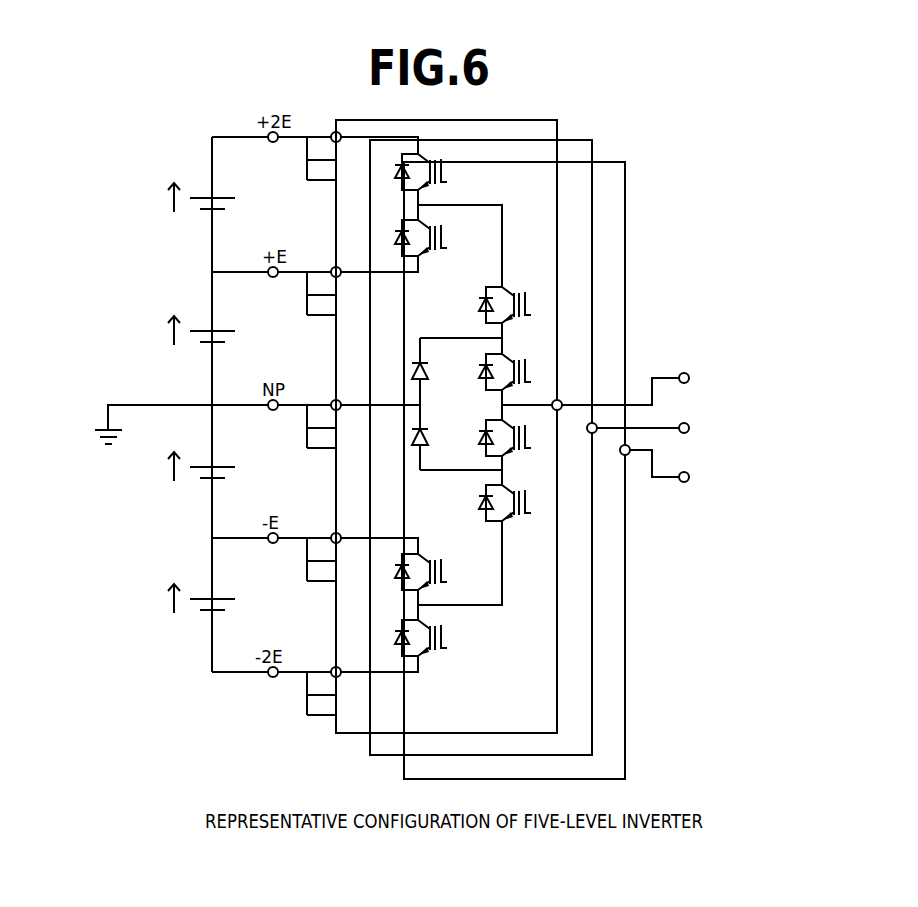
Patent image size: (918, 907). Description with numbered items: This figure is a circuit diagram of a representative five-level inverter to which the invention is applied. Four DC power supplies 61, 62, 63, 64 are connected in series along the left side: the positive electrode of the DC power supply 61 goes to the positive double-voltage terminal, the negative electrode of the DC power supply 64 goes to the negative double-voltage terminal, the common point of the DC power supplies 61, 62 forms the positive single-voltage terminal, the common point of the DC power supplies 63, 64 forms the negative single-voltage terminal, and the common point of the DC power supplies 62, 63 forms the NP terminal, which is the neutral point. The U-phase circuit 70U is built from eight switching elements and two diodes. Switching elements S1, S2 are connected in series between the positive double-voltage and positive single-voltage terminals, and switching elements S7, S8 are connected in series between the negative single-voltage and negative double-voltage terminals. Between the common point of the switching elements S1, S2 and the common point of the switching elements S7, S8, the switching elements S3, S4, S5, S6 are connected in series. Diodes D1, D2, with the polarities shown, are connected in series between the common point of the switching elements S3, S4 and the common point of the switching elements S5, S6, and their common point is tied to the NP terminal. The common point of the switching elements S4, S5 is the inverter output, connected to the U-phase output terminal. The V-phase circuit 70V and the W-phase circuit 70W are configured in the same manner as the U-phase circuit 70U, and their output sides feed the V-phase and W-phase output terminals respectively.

The DC power supply 61 is at (196, 209).
The DC power supply 62 is at (196, 342).
The DC power supply 63 is at (196, 478).
The DC power supply 64 is at (196, 610).
The U-phase circuit 70U is at (537, 426).
The V-phase circuit 70V is at (592, 592).
The W-phase circuit 70W is at (625, 617).
The switching element S1 is at (406, 172).
The switching element S2 is at (406, 238).
The switching element S3 is at (490, 305).
The switching element S4 is at (490, 372).
The switching element S5 is at (490, 438).
The switching element S6 is at (490, 503).
The switching element S7 is at (406, 572).
The switching element S8 is at (406, 638).
The diode D1 is at (404, 372).
The diode D2 is at (404, 438).